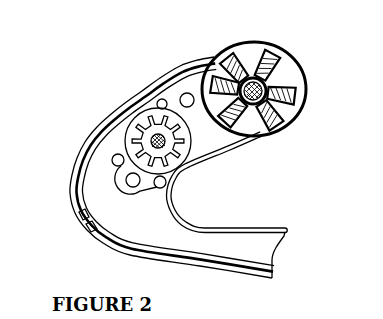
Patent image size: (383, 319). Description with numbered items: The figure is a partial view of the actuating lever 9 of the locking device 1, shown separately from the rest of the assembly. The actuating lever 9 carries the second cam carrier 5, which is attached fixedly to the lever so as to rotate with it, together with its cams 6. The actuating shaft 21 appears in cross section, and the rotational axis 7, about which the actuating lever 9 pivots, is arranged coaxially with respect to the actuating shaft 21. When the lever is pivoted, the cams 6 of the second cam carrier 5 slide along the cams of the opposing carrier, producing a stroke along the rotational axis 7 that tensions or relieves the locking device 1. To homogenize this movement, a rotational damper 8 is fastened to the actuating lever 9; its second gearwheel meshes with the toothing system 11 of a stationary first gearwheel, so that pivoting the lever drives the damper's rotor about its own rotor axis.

The locking device 1 is at (220, 47).
The second cam carrier 5 is at (187, 72).
The cams 6 is at (285, 56).
The rotational axis 7 is at (261, 115).
The rotational damper 8 is at (112, 120).
The actuating lever 9 is at (100, 170).
The toothing system 11 is at (140, 113).
The actuating shaft 21 is at (279, 102).